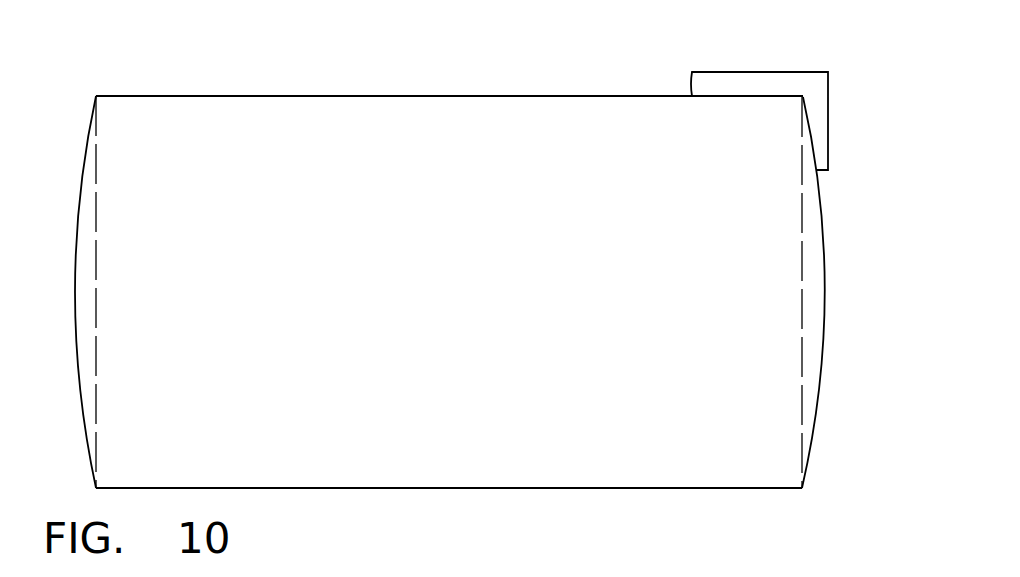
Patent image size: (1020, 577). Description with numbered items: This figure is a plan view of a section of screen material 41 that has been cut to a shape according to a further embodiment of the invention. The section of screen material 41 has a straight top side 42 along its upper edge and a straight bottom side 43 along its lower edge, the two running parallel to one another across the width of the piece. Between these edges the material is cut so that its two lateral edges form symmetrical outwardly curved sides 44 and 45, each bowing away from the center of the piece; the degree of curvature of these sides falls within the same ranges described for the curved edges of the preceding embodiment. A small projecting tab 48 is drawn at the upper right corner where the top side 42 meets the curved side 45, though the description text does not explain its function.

The section of screen material 41 is at (658, 257).
The top side 42 is at (455, 96).
The bottom side 43 is at (489, 488).
The outwardly curved side 44 is at (78, 200).
The outwardly curved side 45 is at (823, 330).
The tab 48 is at (828, 88).